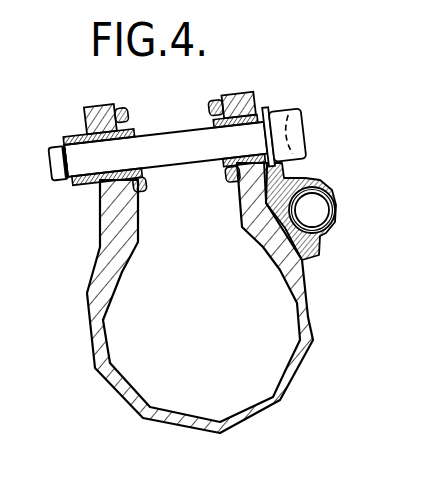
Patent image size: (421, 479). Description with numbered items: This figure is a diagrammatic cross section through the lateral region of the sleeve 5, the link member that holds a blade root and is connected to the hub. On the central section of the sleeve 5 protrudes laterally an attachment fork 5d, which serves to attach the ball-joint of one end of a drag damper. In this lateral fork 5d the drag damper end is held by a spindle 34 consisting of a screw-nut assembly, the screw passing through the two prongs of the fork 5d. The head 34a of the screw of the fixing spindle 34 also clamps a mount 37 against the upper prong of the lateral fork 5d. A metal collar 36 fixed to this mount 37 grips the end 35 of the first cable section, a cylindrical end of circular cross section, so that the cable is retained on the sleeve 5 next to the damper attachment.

The sleeve 5 is at (303, 315).
The attachment fork 5d is at (95, 105).
The spindle 34 is at (185, 140).
The head of the screw 34a is at (293, 115).
The end of the first section 35 is at (313, 213).
The metal collar 36 is at (328, 192).
The mount 37 is at (307, 180).